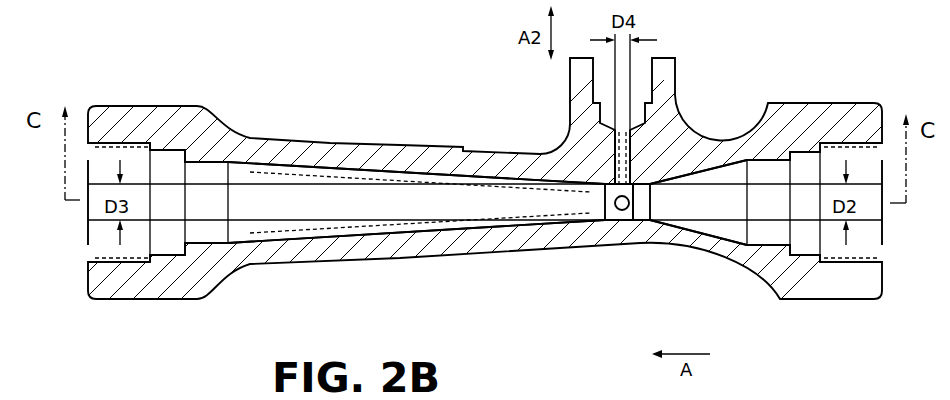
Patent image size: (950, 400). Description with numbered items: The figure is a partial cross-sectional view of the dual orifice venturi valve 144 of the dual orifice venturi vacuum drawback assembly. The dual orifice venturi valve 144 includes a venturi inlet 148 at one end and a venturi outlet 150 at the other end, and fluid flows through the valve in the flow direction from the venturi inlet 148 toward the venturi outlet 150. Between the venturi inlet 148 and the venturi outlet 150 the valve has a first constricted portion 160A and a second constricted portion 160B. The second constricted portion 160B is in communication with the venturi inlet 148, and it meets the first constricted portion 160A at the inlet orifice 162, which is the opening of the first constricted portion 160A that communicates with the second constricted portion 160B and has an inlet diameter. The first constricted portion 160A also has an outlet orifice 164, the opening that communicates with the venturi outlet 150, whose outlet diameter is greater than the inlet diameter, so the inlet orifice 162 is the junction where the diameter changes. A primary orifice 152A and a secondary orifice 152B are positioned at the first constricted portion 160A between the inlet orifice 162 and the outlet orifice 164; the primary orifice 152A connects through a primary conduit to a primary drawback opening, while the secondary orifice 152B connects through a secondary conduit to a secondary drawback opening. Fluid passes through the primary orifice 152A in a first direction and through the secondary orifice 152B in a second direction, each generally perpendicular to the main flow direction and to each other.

The dual orifice venturi valve 144 is at (389, 108).
The venturi inlet 148 is at (884, 257).
The venturi outlet 150 is at (88, 257).
The primary orifice 152A is at (606, 219).
The secondary orifice 152B is at (638, 150).
The first constricted portion 160A is at (630, 223).
The second constricted portion 160B is at (640, 222).
The inlet orifice 162 is at (650, 224).
The outlet orifice 164 is at (603, 213).